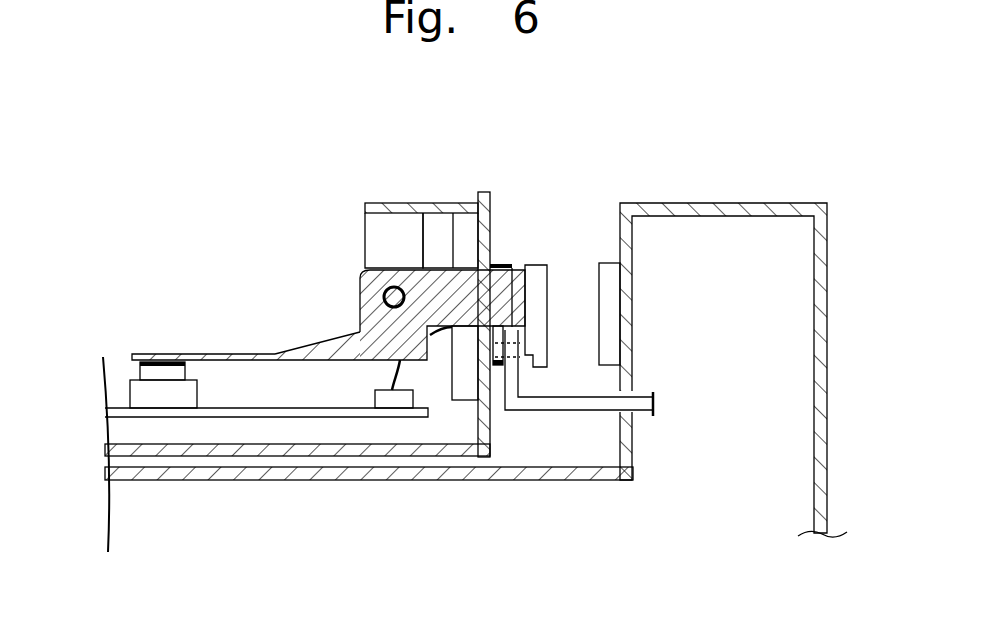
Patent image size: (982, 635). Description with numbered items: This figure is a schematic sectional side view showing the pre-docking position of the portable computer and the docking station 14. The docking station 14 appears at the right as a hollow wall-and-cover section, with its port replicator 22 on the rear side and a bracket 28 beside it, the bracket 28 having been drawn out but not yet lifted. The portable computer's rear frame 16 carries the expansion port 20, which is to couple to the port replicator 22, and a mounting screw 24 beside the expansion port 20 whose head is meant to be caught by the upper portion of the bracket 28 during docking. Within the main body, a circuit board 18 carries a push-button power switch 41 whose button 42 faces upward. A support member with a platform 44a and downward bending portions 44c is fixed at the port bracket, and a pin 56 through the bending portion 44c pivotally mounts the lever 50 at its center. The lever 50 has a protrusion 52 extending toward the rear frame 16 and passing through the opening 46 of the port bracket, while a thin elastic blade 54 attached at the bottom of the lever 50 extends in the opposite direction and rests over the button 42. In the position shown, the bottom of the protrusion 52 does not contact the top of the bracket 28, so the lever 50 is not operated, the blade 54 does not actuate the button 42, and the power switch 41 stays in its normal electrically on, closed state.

The docking station 14 is at (725, 203).
The rear frame 16 is at (490, 440).
The circuit board 18 is at (165, 417).
The expansion port 20 is at (547, 265).
The port replicator 22 is at (603, 263).
The mounting screw 24 is at (528, 355).
The bracket 28 is at (590, 417).
The power switch 41 is at (132, 395).
The button 42 is at (148, 371).
The platform 44a is at (446, 203).
The bending portion 44c is at (388, 222).
The opening 46 is at (493, 262).
The lever 50 is at (316, 342).
The protrusion 52 is at (513, 268).
The elastic blade 54 is at (185, 355).
The pin 56 is at (384, 294).